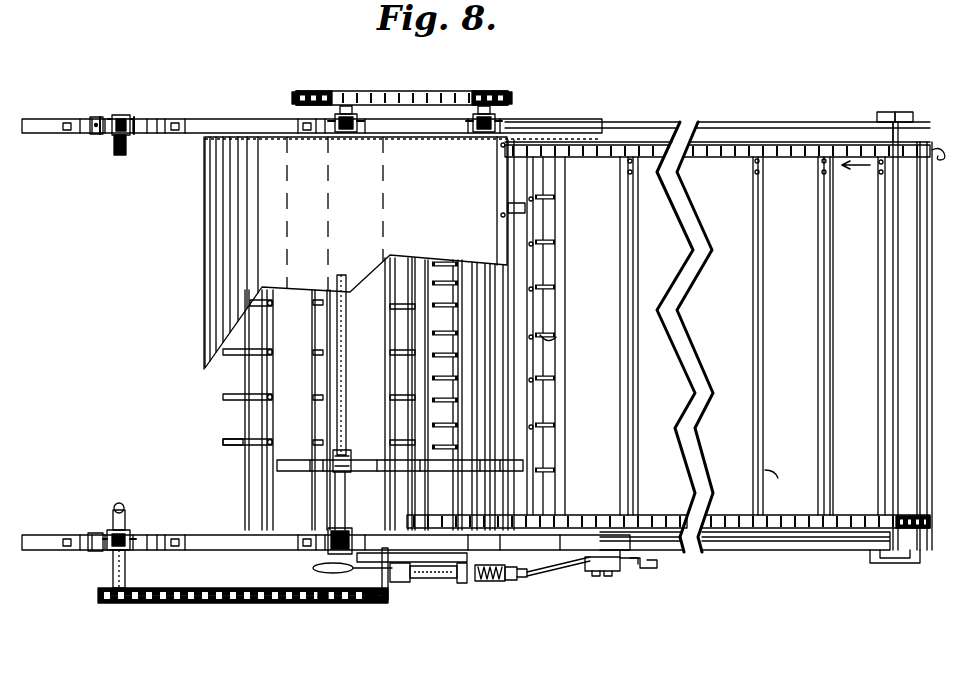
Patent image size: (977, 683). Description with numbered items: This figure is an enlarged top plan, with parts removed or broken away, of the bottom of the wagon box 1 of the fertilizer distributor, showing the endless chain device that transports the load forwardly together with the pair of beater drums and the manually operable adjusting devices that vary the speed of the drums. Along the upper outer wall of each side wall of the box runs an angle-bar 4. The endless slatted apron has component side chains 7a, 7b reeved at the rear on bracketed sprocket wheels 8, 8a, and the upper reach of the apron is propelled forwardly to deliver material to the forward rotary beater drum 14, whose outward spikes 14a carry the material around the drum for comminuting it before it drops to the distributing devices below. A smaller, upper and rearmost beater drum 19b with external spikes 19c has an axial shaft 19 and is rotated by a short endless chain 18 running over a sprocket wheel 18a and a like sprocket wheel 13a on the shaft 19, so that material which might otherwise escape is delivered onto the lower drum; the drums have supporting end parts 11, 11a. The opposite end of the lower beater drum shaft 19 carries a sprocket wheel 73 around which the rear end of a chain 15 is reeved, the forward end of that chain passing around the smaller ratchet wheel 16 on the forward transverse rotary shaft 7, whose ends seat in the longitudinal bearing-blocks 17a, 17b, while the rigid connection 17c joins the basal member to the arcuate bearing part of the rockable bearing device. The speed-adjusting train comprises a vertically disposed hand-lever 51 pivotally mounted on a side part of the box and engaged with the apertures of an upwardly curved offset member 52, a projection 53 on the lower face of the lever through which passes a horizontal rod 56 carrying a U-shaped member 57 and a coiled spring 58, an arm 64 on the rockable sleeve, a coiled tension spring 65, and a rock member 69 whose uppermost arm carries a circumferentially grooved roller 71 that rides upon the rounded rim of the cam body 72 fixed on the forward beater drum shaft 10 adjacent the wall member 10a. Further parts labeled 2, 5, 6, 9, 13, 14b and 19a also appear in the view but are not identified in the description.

The wagon box 1 is at (30, 535).
The frame 2 is at (609, 336).
The angle-bar 4 is at (748, 550).
The bracket 5 is at (898, 563).
The end post 6 is at (922, 200).
The transverse rotary shaft 7 is at (126, 574).
The side chain 7a is at (742, 133).
The side chain 7b is at (784, 515).
The bracketed sprocket wheel 8 is at (941, 162).
The bracketed sprocket wheel 8a is at (930, 522).
The upright 9 is at (622, 402).
The forward beater drum shaft 10 is at (344, 398).
The wall member 10a is at (325, 549).
The supporting end part 11 is at (350, 533).
The supporting end part 11a is at (346, 133).
The chain link 13 is at (370, 604).
The sprocket wheel 13a is at (292, 99).
The forward rotary beater drum 14 is at (358, 456).
The outward spikes 14a is at (276, 432).
The rung end 14b is at (232, 432).
The chain 15 is at (282, 604).
The smaller ratchet wheel 16 is at (98, 600).
The bearing-block 17a is at (91, 117).
The bearing-block 17b is at (126, 117).
The rigid connection 17c is at (84, 535).
The short endless chain 18 is at (426, 92).
The sprocket wheel 18a is at (512, 99).
The axial shaft 19 is at (489, 372).
The ladder rung 19a is at (556, 320).
The smaller beater drum 19b is at (502, 460).
The external spikes 19c is at (558, 340).
The hand-lever 51 is at (642, 570).
The upwardly curved offset member 52 is at (650, 566).
The projection 53 is at (614, 576).
The horizontal rod 56 is at (552, 568).
The U-shaped member 57 is at (530, 580).
The coiled spring 58 is at (505, 582).
The arm 64 is at (450, 579).
The coiled tension spring 65 is at (465, 584).
The rock member 69 is at (403, 583).
The circumferentially grooved roller 71 is at (386, 602).
The cam body 72 is at (320, 570).
The sprocket wheel 73 is at (322, 604).